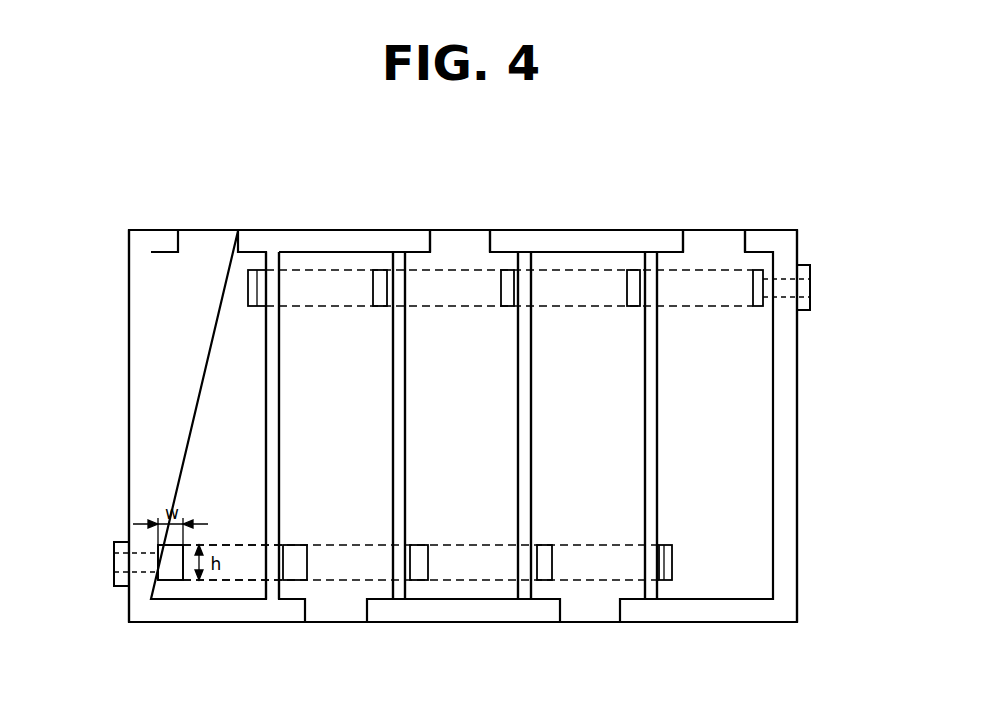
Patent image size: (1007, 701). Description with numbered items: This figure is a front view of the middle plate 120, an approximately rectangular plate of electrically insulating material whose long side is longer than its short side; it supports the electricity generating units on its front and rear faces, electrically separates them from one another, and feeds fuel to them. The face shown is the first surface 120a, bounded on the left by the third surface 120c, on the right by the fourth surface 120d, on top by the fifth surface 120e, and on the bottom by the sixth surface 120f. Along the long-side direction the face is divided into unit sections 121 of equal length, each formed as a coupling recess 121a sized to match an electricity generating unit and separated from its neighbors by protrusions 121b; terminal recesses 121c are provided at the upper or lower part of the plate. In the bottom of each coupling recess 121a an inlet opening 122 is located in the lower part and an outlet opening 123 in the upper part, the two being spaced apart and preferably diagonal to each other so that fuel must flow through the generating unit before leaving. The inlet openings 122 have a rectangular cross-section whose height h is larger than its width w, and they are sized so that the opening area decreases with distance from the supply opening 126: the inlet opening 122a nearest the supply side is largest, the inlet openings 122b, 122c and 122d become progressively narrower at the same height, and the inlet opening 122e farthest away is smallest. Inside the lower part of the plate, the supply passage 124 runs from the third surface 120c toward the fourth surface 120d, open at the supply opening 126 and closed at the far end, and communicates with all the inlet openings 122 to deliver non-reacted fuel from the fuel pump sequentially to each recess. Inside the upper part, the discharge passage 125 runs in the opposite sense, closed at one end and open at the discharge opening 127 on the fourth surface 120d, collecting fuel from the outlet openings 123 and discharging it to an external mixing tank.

The middle plate 120 is at (86, 145).
The first surface 120a is at (162, 236).
The third surface 120c is at (129, 424).
The fourth surface 120d is at (797, 424).
The fifth surface 120e is at (606, 231).
The sixth surface 120f is at (768, 622).
The unit sections 121 is at (468, 488).
The coupling recesses 121a is at (518, 513).
The protrusions 121b is at (657, 498).
The terminal recesses 121c is at (235, 236).
The inlet openings 122 is at (153, 573).
The inlet opening 122a is at (172, 576).
The inlet opening 122b is at (295, 576).
The inlet opening 122c is at (420, 577).
The inlet opening 122d is at (545, 577).
The inlet opening 122e is at (668, 582).
The outlet openings 123 is at (505, 272).
The supply passage 124 is at (225, 583).
The discharge passage 125 is at (737, 271).
The supply opening 126 is at (114, 562).
The discharge opening 127 is at (810, 287).